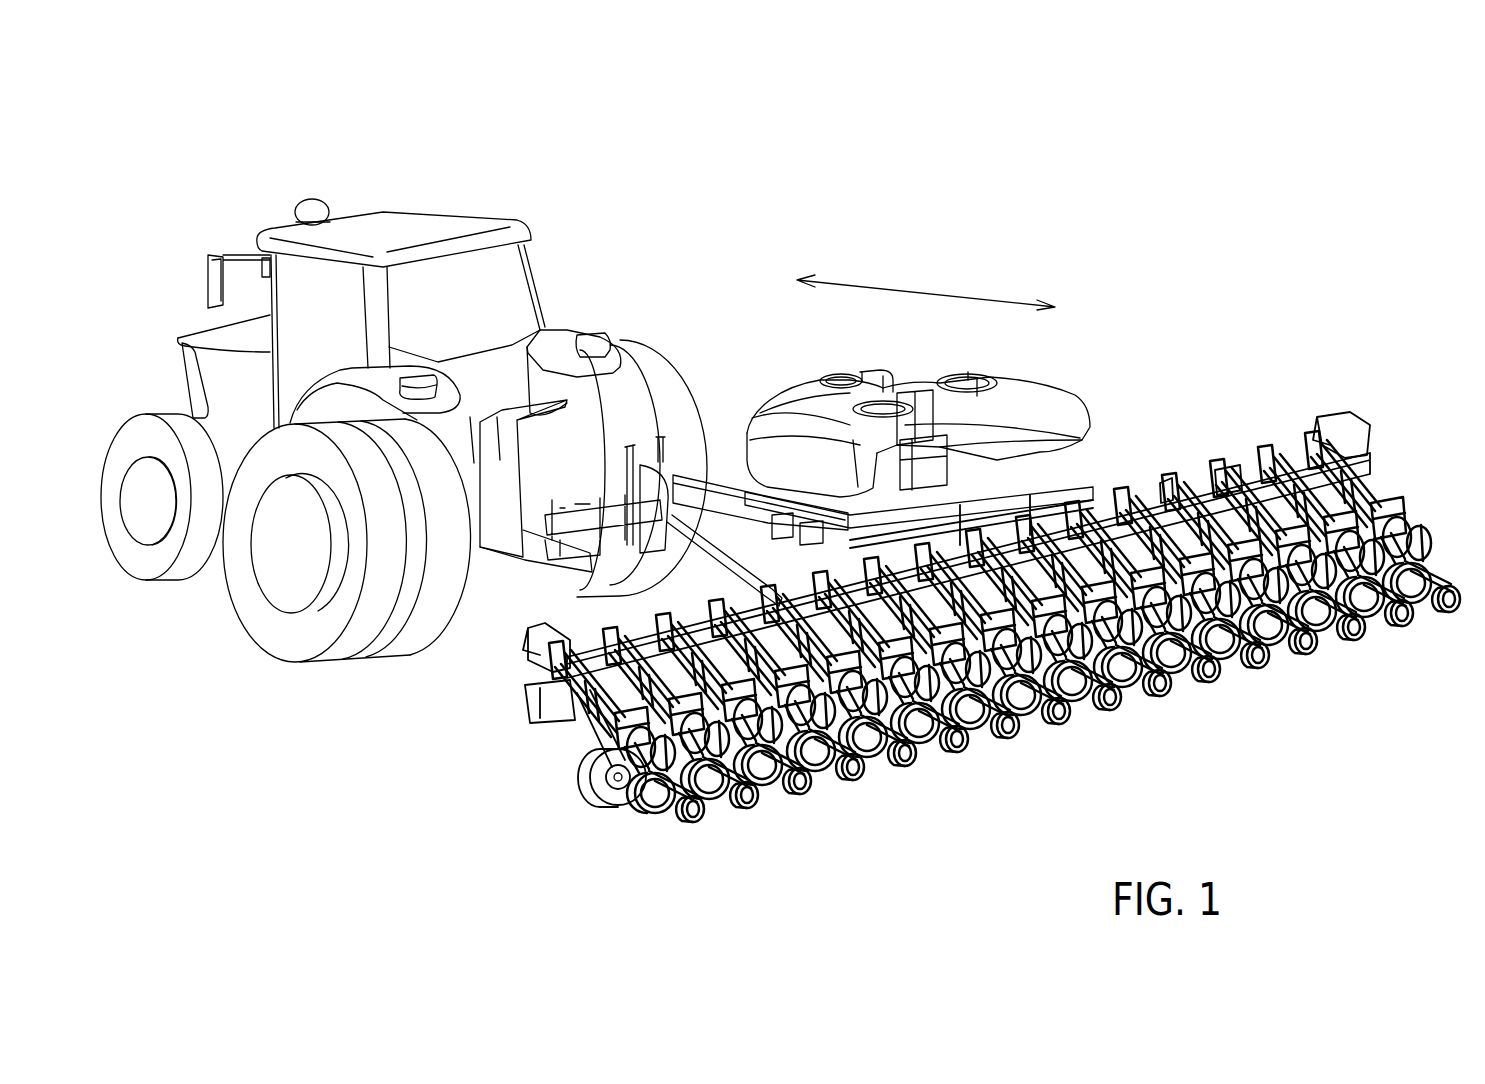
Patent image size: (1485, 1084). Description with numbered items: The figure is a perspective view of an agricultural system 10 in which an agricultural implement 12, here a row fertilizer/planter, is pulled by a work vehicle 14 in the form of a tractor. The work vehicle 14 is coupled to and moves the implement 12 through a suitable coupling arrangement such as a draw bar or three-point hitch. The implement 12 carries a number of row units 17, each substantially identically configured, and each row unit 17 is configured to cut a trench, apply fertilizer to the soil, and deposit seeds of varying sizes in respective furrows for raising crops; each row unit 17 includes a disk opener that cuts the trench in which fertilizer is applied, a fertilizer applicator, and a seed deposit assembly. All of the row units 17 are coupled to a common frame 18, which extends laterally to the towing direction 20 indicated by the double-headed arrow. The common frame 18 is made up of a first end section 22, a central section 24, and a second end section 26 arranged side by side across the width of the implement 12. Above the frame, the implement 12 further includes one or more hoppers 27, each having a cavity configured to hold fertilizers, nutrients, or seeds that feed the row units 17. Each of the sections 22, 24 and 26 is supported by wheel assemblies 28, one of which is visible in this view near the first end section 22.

The agricultural system 10 is at (797, 123).
The agricultural implement 12 is at (1386, 372).
The work vehicle 14 is at (570, 200).
The row units 17 is at (1426, 652).
The common frame 18 is at (1279, 444).
The towing direction 20 is at (877, 287).
The first end section 22 is at (564, 612).
The central section 24 is at (1096, 450).
The second end section 26 is at (1226, 450).
The hoppers 27 is at (767, 420).
The wheel assemblies 28 is at (565, 765).